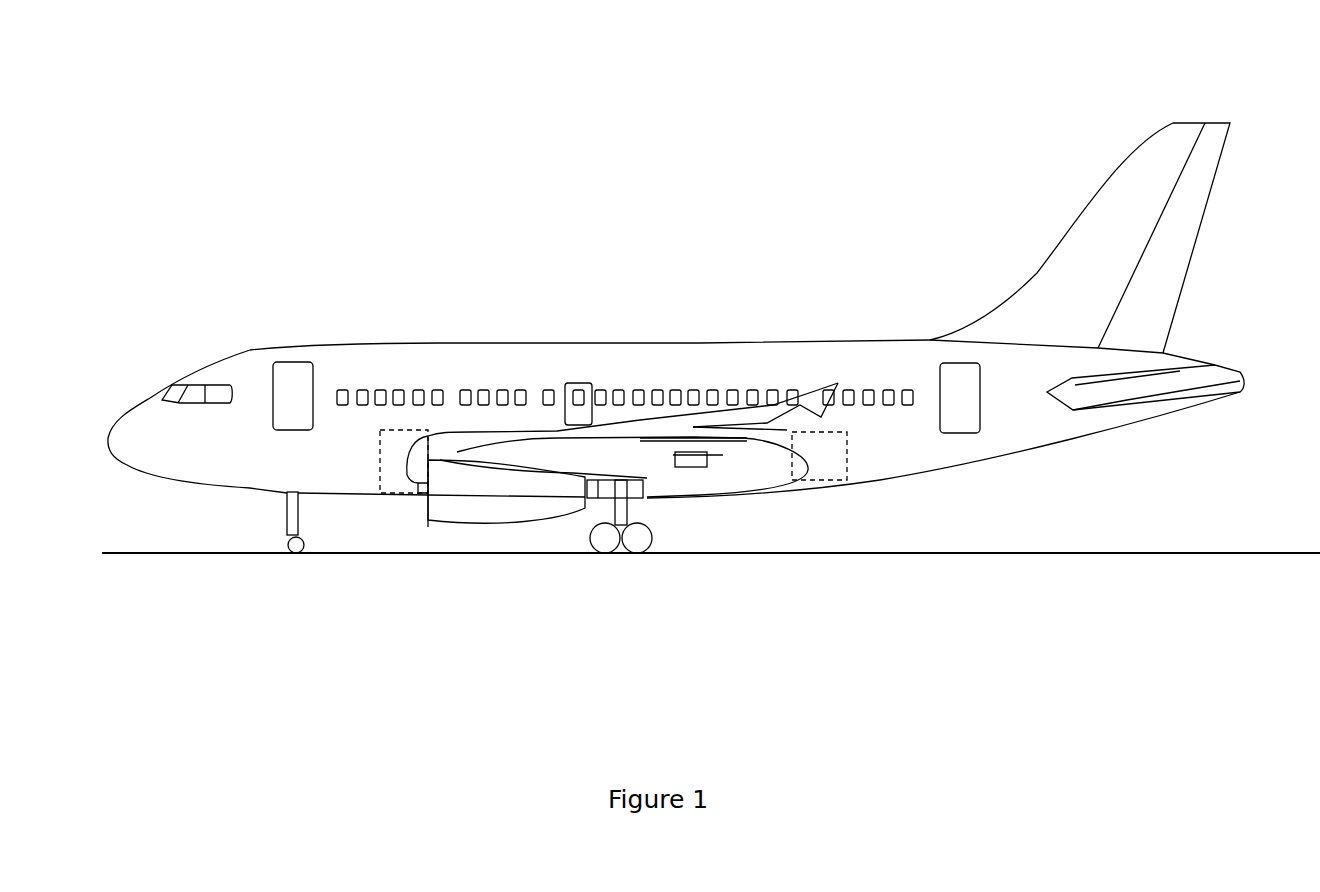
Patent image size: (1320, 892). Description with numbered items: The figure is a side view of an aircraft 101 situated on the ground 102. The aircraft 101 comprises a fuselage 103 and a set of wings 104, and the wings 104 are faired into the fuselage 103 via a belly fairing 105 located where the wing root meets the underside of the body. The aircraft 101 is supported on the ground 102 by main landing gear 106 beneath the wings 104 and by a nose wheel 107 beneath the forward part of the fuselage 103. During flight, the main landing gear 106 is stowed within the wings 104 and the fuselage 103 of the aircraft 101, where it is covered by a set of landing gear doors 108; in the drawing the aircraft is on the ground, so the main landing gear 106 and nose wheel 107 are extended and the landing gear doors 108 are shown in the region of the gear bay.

The aircraft 101 is at (434, 276).
The ground 102 is at (1010, 556).
The fuselage 103 is at (183, 482).
The set of wings 104 is at (743, 427).
The belly fairing 105 is at (415, 460).
The main landing gear 106 is at (647, 552).
The nose wheel 107 is at (288, 553).
The set of landing gear doors 108 is at (640, 490).